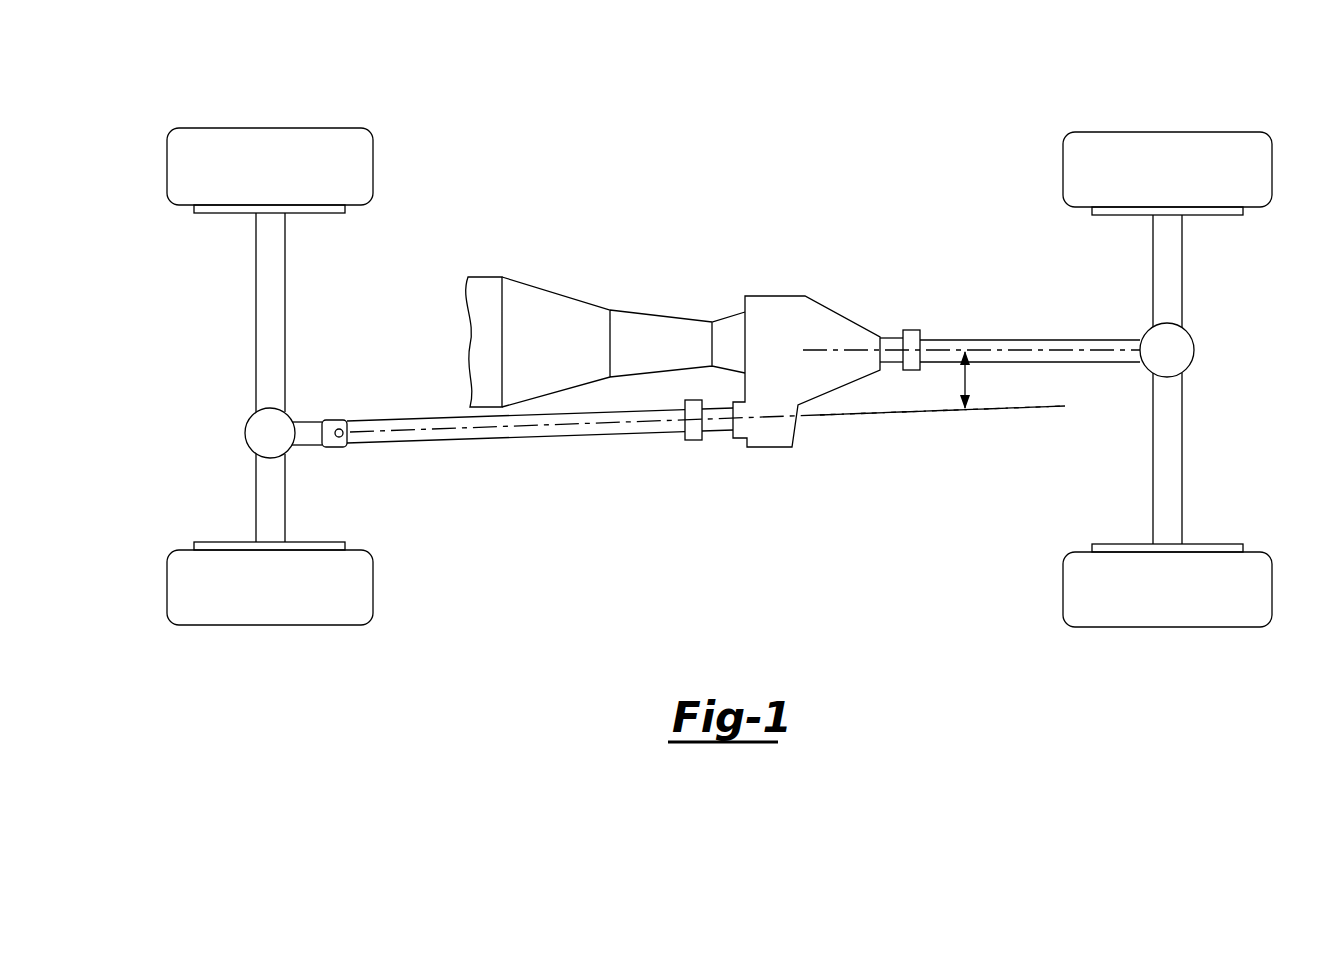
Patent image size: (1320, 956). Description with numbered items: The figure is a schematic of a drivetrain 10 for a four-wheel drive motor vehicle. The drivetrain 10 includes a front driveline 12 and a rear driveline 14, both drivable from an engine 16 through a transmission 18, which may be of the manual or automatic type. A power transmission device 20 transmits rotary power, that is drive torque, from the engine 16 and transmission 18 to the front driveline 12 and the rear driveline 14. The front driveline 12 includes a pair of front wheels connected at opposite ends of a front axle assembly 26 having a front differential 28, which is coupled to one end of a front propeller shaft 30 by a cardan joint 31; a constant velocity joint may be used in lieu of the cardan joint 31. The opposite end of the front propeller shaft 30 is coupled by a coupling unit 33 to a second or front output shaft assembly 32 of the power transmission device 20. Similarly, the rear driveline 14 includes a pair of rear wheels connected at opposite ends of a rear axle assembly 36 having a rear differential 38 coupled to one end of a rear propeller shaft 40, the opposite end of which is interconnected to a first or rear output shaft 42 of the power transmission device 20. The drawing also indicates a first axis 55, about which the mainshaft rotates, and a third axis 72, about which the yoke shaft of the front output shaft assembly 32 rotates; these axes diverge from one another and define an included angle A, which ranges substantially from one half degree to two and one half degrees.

The drivetrain 10 is at (930, 206).
The front driveline 12 is at (312, 368).
The rear driveline 14 is at (1092, 320).
The engine 16 is at (487, 280).
The transmission 18 is at (642, 316).
The power transmission device 20 is at (827, 303).
The front axle assembly 26 is at (262, 290).
The front differential 28 is at (250, 430).
The front propeller shaft 30 is at (428, 425).
The cardan joint 31 is at (335, 419).
The second or front output shaft assembly 32 is at (717, 432).
The coupling unit 33 is at (686, 432).
The rear axle assembly 36 is at (1163, 290).
The rear differential 38 is at (1183, 350).
The rear propeller shaft 40 is at (1105, 363).
The first or rear output shaft 42 is at (895, 325).
The first axis 55 is at (981, 340).
The third axis 72 is at (892, 413).